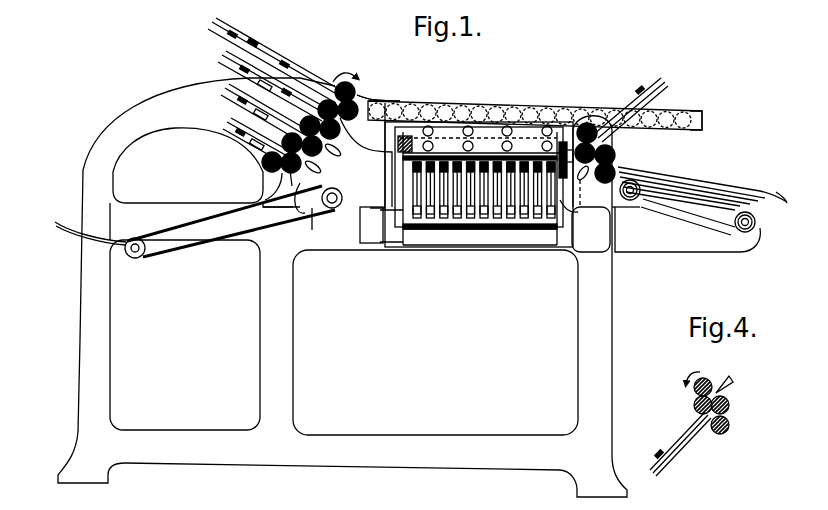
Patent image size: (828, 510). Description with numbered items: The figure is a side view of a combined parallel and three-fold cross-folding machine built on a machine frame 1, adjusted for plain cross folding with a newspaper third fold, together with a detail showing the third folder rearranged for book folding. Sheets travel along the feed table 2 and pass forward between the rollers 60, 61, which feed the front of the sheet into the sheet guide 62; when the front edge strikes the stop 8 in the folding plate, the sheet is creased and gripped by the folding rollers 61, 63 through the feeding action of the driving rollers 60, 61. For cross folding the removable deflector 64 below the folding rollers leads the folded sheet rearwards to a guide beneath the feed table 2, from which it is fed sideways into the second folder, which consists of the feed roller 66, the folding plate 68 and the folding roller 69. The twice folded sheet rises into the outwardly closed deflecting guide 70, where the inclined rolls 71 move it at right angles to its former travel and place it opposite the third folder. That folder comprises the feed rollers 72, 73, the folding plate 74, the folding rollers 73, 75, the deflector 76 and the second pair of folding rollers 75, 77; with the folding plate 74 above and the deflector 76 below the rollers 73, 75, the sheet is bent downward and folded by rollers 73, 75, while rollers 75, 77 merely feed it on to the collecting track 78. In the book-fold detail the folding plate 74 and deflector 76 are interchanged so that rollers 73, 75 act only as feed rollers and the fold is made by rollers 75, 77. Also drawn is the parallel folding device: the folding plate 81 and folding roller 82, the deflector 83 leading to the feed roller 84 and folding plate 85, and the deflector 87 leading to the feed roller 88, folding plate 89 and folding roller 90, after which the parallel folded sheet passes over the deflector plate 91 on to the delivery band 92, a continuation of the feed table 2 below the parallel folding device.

In FIG. 1, the machine frame 1 is at (289, 373).
In FIG. 1, the feed table 2 is at (698, 121).
In FIG. 1, the stop 8 is at (256, 43).
In FIG. 1, the driving roller 60 is at (356, 86).
In FIG. 1, the feed and folding roller 61 is at (362, 99).
In FIG. 1, the sheet guide 62 is at (232, 32).
In FIG. 1, the folding roller 63 is at (318, 104).
In FIG. 1, the removable deflector 64 is at (366, 154).
In FIG. 1, the feed roller 66 is at (421, 200).
In FIG. 1, the folding plate 68 is at (518, 230).
In FIG. 1, the folding roller 69 is at (415, 103).
In FIG. 1, the deflecting guide 70 is at (490, 133).
In FIG. 1, the inclined rolls 71 is at (523, 118).
In FIG. 1, the feed roller 72 is at (598, 116).
In FIG. 4, the feed roller 72 is at (708, 384).
In FIG. 1, the feed and folding roller 73 is at (585, 197).
In FIG. 4, the feed and folding roller 73 is at (696, 408).
In FIG. 1, the folding plate 74 is at (657, 92).
In FIG. 4, the folding plate 74 is at (668, 458).
In FIG. 1, the folding roller 75 is at (615, 160).
In FIG. 4, the folding roller 75 is at (731, 410).
In FIG. 1, the deflector 76 is at (586, 182).
In FIG. 4, the deflector 76 is at (732, 382).
In FIG. 1, the folding roller 77 is at (623, 182).
In FIG. 4, the folding roller 77 is at (727, 433).
In FIG. 1, the collecting track 78 is at (733, 235).
In FIG. 1, the folding plate 81 is at (236, 66).
In FIG. 1, the folding and feed roller 82 is at (313, 118).
In FIG. 1, the deflector 83 is at (320, 172).
In FIG. 1, the feed and folding roller 84 is at (292, 150).
In FIG. 1, the folding plate 85 is at (235, 104).
In FIG. 1, the deflector 87 is at (312, 215).
In FIG. 1, the feed and folding roller 88 is at (290, 172).
In FIG. 1, the folding plate 89 is at (236, 135).
In FIG. 1, the folding roller 90 is at (262, 165).
In FIG. 1, the deflector plate 91 is at (272, 191).
In FIG. 1, the delivery band 92 is at (185, 228).